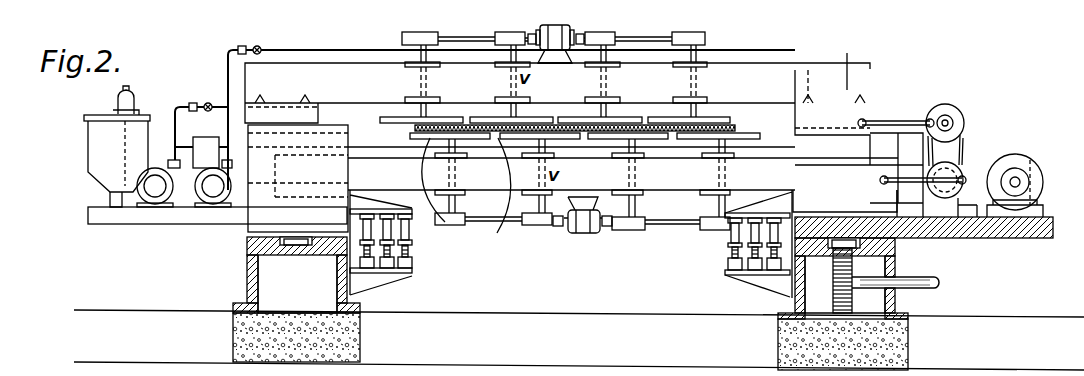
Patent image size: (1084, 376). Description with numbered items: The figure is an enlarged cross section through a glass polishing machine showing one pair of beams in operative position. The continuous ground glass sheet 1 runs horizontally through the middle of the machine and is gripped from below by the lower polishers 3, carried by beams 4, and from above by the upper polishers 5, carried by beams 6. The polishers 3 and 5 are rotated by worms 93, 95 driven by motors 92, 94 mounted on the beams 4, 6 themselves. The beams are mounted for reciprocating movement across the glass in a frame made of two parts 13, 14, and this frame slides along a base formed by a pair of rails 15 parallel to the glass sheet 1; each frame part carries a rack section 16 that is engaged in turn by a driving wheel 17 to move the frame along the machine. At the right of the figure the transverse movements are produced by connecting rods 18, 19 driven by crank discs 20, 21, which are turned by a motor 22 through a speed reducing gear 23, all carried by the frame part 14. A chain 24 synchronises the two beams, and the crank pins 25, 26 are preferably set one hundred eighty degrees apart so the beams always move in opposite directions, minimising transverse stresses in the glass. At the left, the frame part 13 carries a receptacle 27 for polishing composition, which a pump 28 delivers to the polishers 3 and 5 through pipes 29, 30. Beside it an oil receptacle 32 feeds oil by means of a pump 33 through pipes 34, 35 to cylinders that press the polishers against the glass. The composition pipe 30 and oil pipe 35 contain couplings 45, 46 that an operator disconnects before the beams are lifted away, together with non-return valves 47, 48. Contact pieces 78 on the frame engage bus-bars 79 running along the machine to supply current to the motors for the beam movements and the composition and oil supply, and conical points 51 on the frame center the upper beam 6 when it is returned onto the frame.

The glass sheet 1 is at (715, 122).
The lower polishers 3 is at (425, 140).
The lower beams 4 is at (535, 226).
The upper polishers 5 is at (385, 122).
The upper beams 6 is at (553, 78).
The frame part 13 is at (262, 218).
The frame part 14 is at (965, 240).
The rails 15 is at (265, 248).
The rack section 16 is at (833, 268).
The driving wheel 17 is at (855, 300).
The connecting rod 18 is at (905, 177).
The connecting rod 19 is at (896, 118).
The crank disc 20 is at (960, 172).
The crank disc 21 is at (958, 110).
The motor 22 is at (1028, 160).
The speed reducing gear 23 is at (972, 225).
The chain 24 is at (960, 140).
The crank pin 25 is at (958, 205).
The crank pin 26 is at (945, 104).
The receptacle 27 is at (96, 148).
The pump 28 is at (150, 200).
The pipe 29 is at (437, 222).
The composition pipe 30 is at (340, 103).
The oil receptacle 32 is at (202, 140).
The pump 33 is at (210, 205).
The pipe 34 is at (497, 226).
The oil pipe 35 is at (332, 50).
The coupling 45 is at (192, 103).
The coupling 46 is at (238, 46).
The non return valve 47 is at (209, 103).
The non return valve 48 is at (259, 47).
The conical points 51 is at (808, 70).
The contact pieces 78 is at (412, 245).
The bus-bars 79 is at (410, 252).
The motor 92 is at (553, 25).
The worm 93 is at (500, 30).
The motor 94 is at (586, 233).
The worm 95 is at (630, 230).